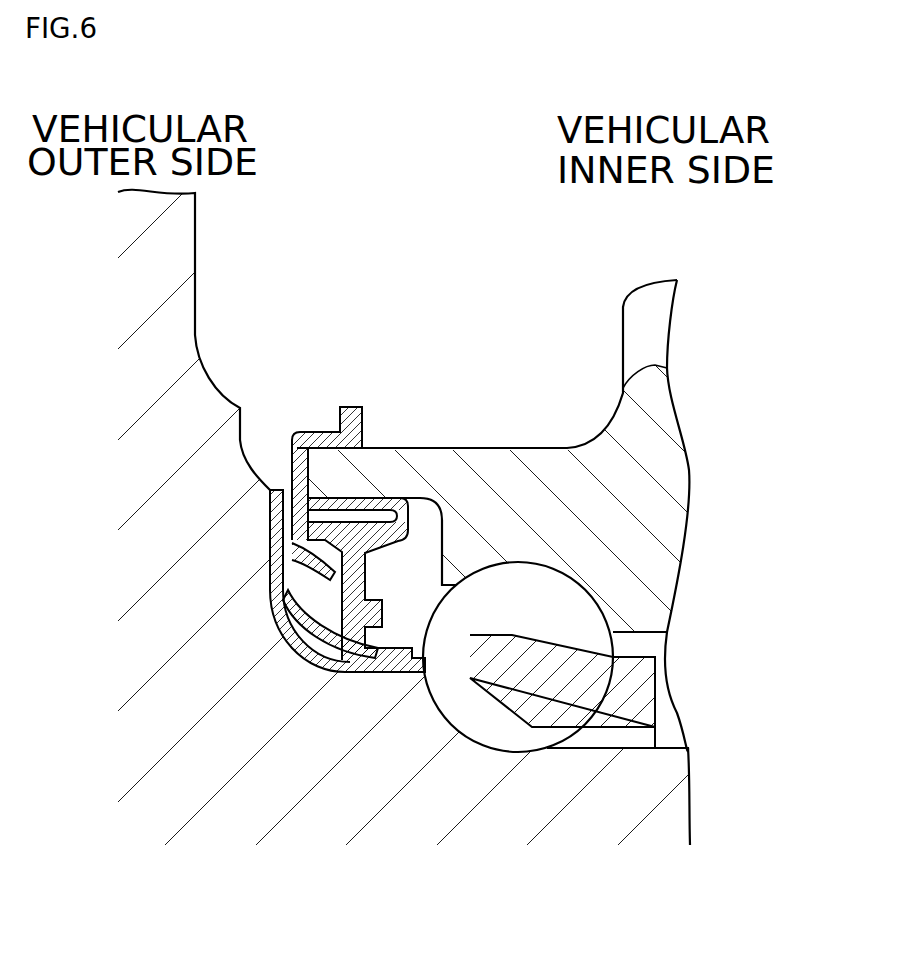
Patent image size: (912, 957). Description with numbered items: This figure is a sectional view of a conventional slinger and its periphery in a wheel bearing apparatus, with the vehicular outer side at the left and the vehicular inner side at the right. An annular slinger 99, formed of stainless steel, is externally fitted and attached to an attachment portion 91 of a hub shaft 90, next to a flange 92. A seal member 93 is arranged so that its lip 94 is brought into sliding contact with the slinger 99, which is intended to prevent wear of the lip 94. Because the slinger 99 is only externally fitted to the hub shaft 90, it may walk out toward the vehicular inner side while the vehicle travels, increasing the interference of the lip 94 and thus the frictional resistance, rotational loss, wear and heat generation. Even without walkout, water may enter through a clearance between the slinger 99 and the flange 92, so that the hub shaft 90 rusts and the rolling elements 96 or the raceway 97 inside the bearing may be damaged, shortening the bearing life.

The hub shaft 90 is at (388, 750).
The attachment portion 91 is at (357, 693).
The flange 92 is at (205, 562).
The seal member 93 is at (372, 506).
The lip 94 is at (282, 622).
The rolling elements (balls) 96 is at (520, 577).
The raceway 97 is at (488, 745).
The slinger 99 is at (282, 491).